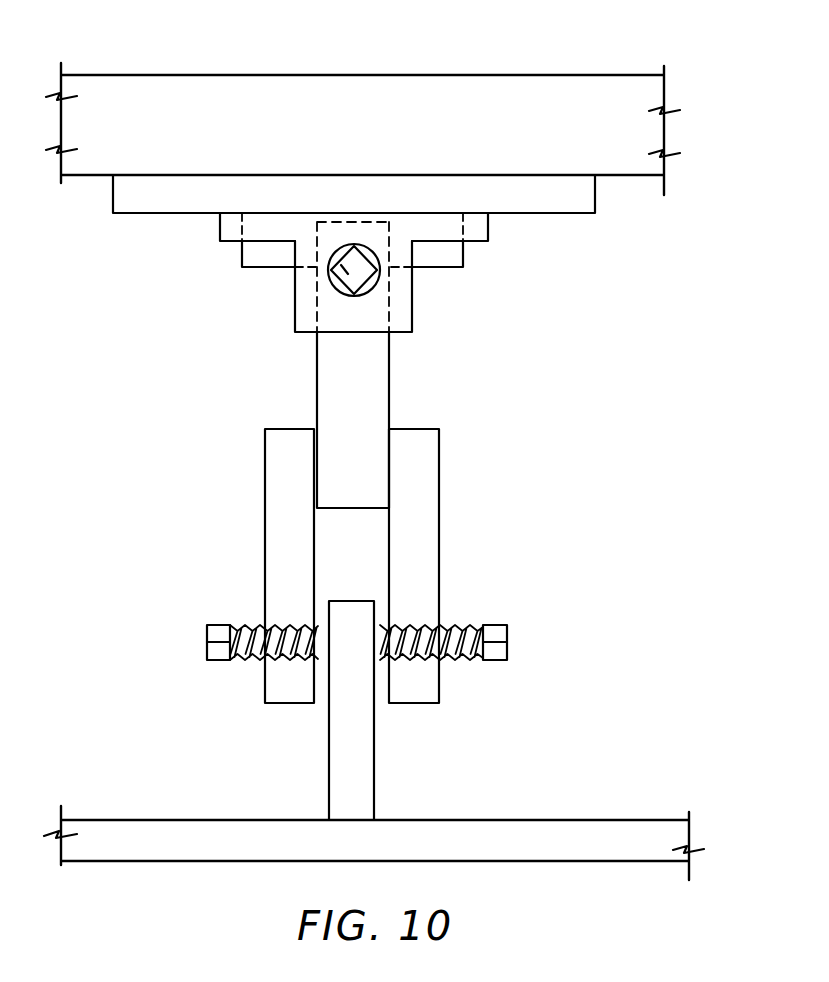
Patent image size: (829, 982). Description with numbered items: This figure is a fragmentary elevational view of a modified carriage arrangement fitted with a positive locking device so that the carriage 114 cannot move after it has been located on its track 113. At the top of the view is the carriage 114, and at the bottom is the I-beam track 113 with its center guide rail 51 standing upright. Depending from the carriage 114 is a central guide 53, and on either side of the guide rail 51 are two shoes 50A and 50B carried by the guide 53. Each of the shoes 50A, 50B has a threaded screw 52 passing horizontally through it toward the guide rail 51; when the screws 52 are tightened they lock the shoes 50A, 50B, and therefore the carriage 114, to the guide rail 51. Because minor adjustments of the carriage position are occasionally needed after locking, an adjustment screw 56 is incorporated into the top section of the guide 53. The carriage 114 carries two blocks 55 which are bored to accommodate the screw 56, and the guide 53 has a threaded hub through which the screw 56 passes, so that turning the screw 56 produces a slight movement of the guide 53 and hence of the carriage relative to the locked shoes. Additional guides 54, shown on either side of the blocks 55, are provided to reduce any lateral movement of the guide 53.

The carriage 114 is at (275, 75).
The track 113 is at (570, 820).
The blocks 55 is at (412, 322).
The additional guides 54 is at (242, 255).
The adjustment screw 56 is at (340, 268).
The central guide 53 is at (380, 388).
The shoe 50A is at (439, 511).
The shoe 50B is at (265, 510).
The threaded screw 52 is at (207, 638).
The center guide rail 51 is at (380, 752).